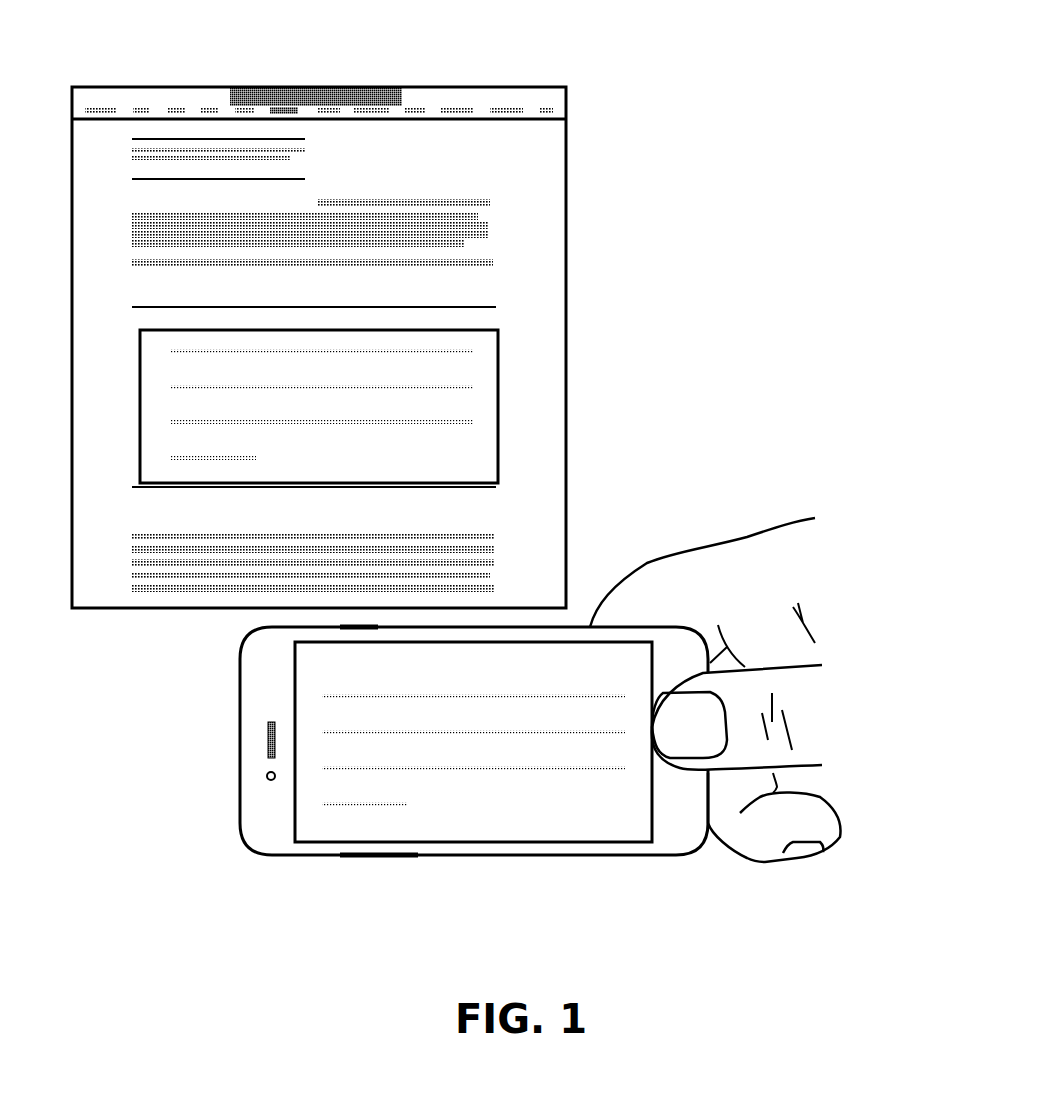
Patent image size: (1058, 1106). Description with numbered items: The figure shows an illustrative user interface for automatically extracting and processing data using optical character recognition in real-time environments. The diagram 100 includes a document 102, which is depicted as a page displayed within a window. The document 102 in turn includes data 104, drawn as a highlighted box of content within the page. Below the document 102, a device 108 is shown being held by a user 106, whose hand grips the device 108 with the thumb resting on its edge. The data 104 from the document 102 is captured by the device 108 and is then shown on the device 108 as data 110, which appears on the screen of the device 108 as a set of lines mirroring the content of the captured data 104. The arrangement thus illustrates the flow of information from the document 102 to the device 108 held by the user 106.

The diagram 100 is at (496, 31).
The document 102 is at (386, 347).
The data 104 is at (470, 404).
The user 106 is at (780, 557).
The device 108 is at (430, 786).
The data 110 is at (340, 831).